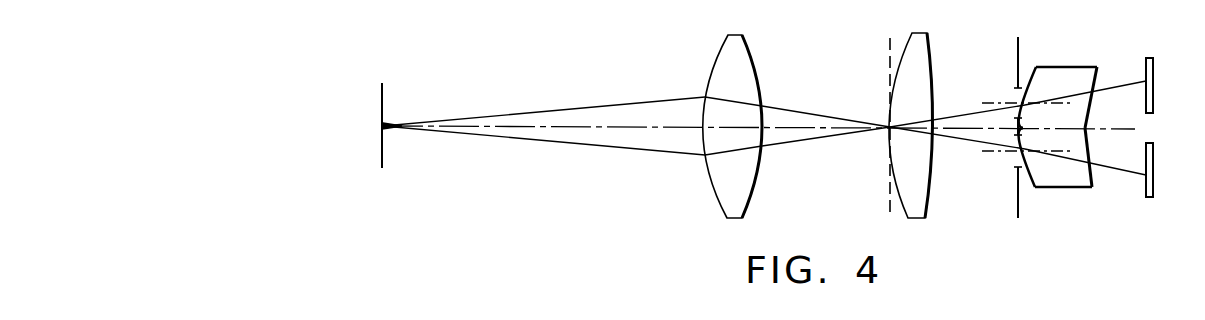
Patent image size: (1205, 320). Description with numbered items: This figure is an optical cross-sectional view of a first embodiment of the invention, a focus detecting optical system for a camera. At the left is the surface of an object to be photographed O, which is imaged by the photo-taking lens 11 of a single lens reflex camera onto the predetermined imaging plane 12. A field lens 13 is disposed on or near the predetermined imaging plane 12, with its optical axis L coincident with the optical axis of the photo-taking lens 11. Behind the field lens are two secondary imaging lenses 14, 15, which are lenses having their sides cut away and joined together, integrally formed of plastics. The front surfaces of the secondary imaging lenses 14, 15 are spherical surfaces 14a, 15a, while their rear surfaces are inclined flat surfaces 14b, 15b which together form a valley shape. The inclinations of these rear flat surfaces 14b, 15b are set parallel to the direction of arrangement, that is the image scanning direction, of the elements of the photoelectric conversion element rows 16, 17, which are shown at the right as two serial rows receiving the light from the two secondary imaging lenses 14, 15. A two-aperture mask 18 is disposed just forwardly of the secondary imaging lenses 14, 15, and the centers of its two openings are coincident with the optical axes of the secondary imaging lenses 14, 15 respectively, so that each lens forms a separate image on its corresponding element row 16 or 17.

The surface of an object to be photographed O is at (383, 102).
The photo-taking lens 11 is at (743, 63).
The predetermined imaging plane 12 is at (888, 43).
The field lens 13 is at (922, 47).
The secondary imaging lens 14 is at (1058, 64).
The spherical surface 14a is at (1032, 62).
The inclined flat surface 14b is at (1102, 80).
The secondary imaging lens 15 is at (1061, 190).
The spherical surface 15a is at (1033, 188).
The inclined flat surface 15b is at (1072, 182).
The photoelectric conversion element row 16 is at (1153, 72).
The photoelectric conversion element row 17 is at (1153, 185).
The two-aperture mask 18 is at (1016, 42).
The optical axis L is at (1127, 129).